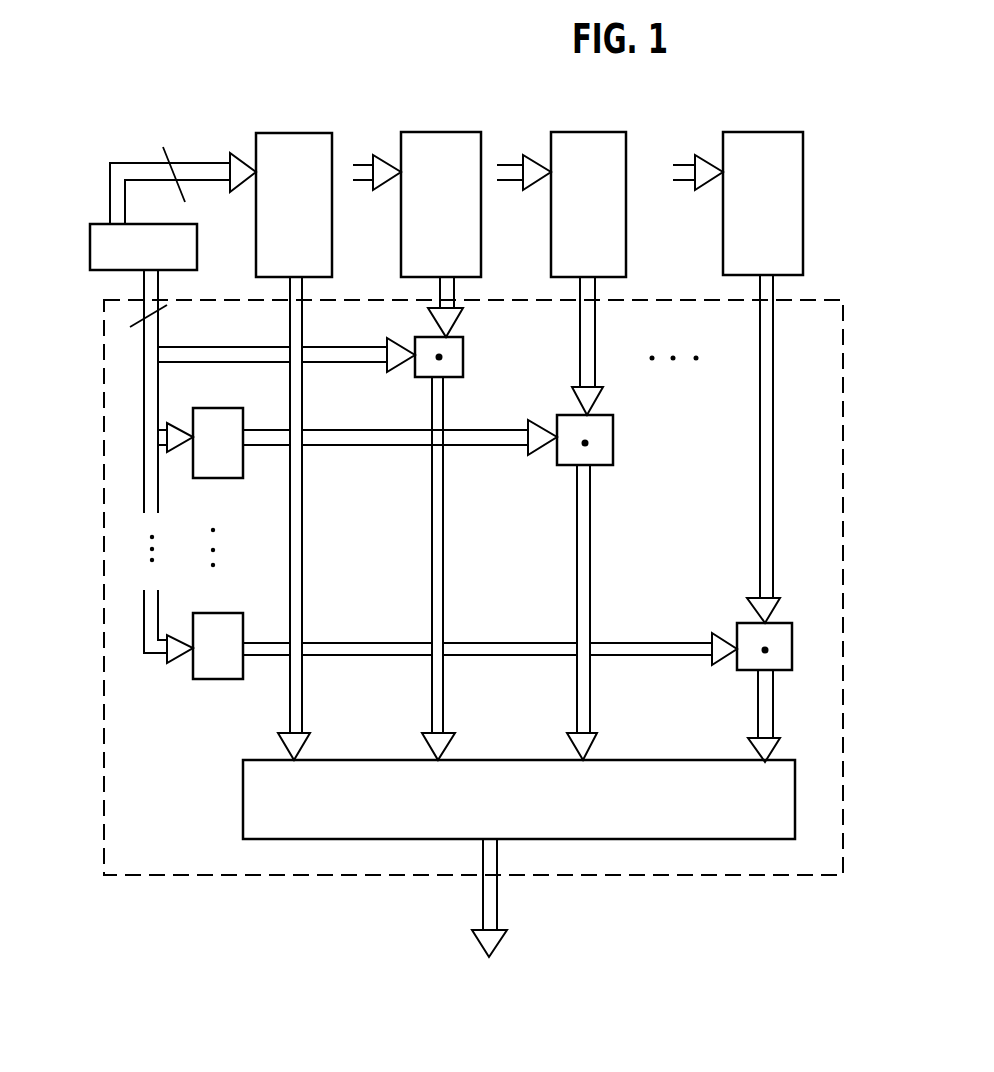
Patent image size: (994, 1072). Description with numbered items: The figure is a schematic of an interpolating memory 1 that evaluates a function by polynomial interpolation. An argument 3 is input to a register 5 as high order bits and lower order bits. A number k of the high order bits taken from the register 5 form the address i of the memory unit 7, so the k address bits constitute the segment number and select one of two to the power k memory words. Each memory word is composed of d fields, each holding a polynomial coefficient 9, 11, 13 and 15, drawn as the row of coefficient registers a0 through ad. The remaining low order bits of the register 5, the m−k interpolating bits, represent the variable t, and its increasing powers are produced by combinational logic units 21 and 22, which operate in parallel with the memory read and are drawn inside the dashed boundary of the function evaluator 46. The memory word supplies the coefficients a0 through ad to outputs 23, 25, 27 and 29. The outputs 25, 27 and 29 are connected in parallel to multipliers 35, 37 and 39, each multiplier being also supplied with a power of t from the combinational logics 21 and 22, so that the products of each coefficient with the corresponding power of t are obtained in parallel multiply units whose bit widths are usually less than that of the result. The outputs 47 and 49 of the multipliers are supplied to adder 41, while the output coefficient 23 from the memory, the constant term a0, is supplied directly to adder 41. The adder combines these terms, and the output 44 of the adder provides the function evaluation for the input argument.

The interpolating memory 1 is at (95, 745).
The argument 3 is at (54, 262).
The register 5 is at (107, 271).
The memory unit 7 is at (342, 104).
The polynomial coefficient 9 is at (332, 264).
The polynomial coefficient 11 is at (514, 250).
The polynomial coefficient 13 is at (626, 262).
The polynomial coefficient 15 is at (803, 246).
The combinational logic unit 21 is at (222, 479).
The combinational logic unit 22 is at (221, 680).
The output 23 is at (302, 338).
The output 25 is at (458, 304).
The output 27 is at (595, 340).
The output 29 is at (773, 373).
The multiplier 35 is at (463, 358).
The multiplier 37 is at (613, 448).
The multiplier 39 is at (792, 638).
The adder 41 is at (243, 797).
The output 44 is at (497, 921).
The function evaluator 46 is at (843, 437).
The output 47 is at (445, 621).
The output 49 is at (773, 716).